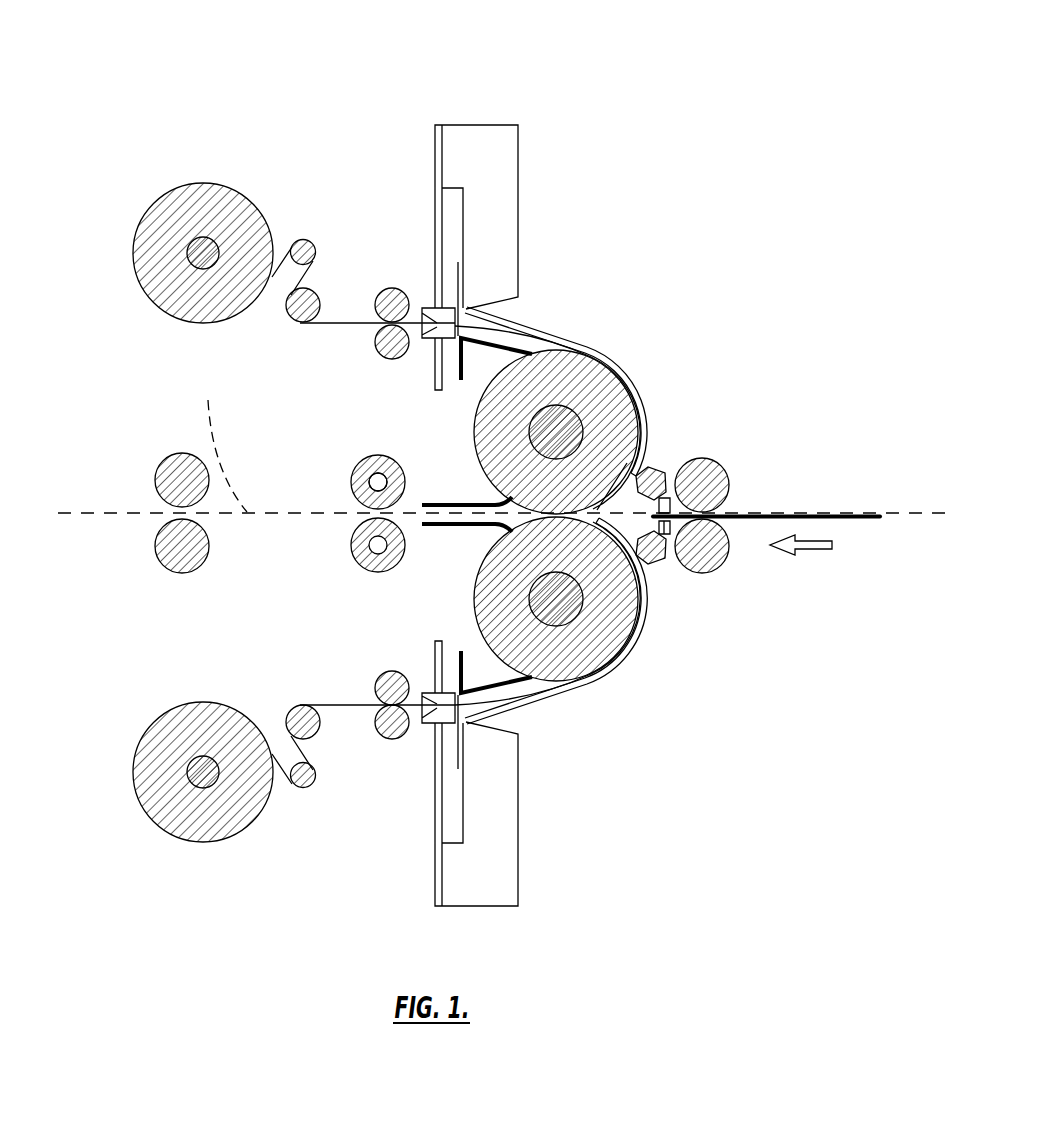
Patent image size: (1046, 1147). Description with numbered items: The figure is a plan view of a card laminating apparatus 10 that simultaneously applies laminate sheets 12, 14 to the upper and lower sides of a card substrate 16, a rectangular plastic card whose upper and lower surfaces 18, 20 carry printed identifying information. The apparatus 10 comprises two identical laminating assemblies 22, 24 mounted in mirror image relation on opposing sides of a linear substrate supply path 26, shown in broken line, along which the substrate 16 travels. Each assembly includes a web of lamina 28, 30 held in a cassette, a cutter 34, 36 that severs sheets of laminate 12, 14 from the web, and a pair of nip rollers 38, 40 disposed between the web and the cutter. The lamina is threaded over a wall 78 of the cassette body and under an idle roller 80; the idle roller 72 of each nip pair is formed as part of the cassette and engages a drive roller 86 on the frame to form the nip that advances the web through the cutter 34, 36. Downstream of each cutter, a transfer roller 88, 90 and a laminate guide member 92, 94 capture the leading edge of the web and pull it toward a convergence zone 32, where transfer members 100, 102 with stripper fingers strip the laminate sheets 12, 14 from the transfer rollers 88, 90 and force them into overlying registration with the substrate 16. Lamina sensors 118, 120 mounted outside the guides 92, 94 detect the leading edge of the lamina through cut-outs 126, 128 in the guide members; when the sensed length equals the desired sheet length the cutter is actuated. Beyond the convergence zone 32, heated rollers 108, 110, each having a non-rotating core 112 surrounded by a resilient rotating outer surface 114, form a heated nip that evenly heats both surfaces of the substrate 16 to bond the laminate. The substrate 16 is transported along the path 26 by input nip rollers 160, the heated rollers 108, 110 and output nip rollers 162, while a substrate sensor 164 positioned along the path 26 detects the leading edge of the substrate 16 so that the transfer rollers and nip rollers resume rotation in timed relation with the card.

The card laminating apparatus 10 is at (697, 107).
The laminate sheet 12 is at (530, 340).
The laminate sheet 14 is at (503, 697).
The card substrate 16 is at (866, 511).
The upper surface 18 is at (792, 515).
The lower surface 20 is at (842, 524).
The laminating assembly 22 is at (594, 365).
The laminating assembly 24 is at (602, 687).
The substrate supply path 26 is at (227, 438).
The web of lamina 28 is at (202, 183).
The web of lamina 30 is at (178, 840).
The convergence zone 32 is at (590, 572).
The cutter 34 is at (518, 213).
The cutter 36 is at (518, 873).
The nip rollers 38 is at (393, 287).
The nip rollers 40 is at (385, 737).
The idle roller 72 is at (383, 300).
The wall 78 is at (302, 240).
The idle roller 80 is at (302, 323).
The drive roller 86 is at (390, 359).
The transfer roller 88 is at (603, 396).
The transfer roller 90 is at (596, 648).
The laminate guide member 92 is at (645, 390).
The laminate guide member 94 is at (568, 693).
The transfer member 100 is at (447, 502).
The transfer member 102 is at (453, 527).
The heated roller 108 is at (357, 470).
The heated roller 110 is at (353, 545).
The non-rotating core 112 is at (370, 487).
The resilient rotating outer surface 114 is at (341, 494).
The lamina sensor 118 is at (693, 458).
The lamina sensor 120 is at (672, 570).
The cut-out 126 is at (655, 466).
The cut-out 128 is at (655, 567).
The input nip rollers 160 is at (777, 489).
The output nip rollers 162 is at (156, 458).
The substrate sensor 164 is at (703, 566).